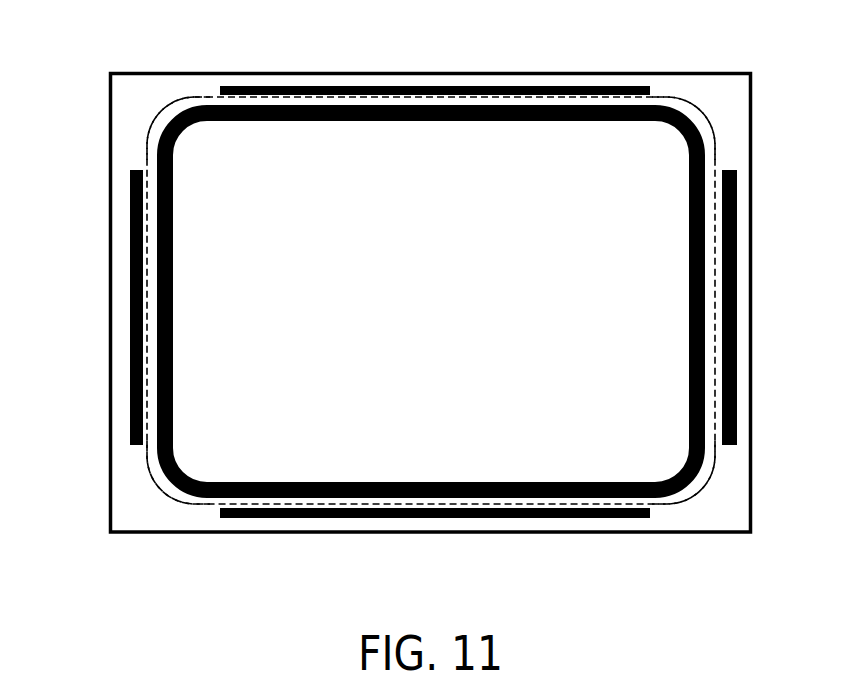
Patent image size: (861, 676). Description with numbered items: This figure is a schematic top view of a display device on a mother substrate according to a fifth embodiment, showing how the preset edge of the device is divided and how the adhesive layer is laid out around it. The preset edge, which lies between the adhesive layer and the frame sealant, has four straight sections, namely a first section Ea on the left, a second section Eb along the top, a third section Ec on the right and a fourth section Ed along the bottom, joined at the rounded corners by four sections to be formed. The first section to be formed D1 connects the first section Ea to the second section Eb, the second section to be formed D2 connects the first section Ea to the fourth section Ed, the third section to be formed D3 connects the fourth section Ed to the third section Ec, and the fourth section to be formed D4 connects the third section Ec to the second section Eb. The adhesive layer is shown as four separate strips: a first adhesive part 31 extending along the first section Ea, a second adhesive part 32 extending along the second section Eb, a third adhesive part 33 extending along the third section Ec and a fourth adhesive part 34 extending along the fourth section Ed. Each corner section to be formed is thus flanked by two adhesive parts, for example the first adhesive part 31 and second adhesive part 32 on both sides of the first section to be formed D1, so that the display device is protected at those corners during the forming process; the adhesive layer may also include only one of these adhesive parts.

The first adhesive part 31 is at (130, 363).
The second adhesive part 32 is at (520, 86).
The third adhesive part 33 is at (737, 326).
The fourth adhesive part 34 is at (435, 518).
The first section Ea is at (130, 270).
The second section Eb is at (417, 86).
The third section Ec is at (737, 290).
The fourth section Ed is at (532, 518).
The first section to be formed D1 is at (148, 119).
The second section to be formed D2 is at (152, 486).
The third section to be formed D3 is at (714, 490).
The fourth section to be formed D4 is at (712, 108).